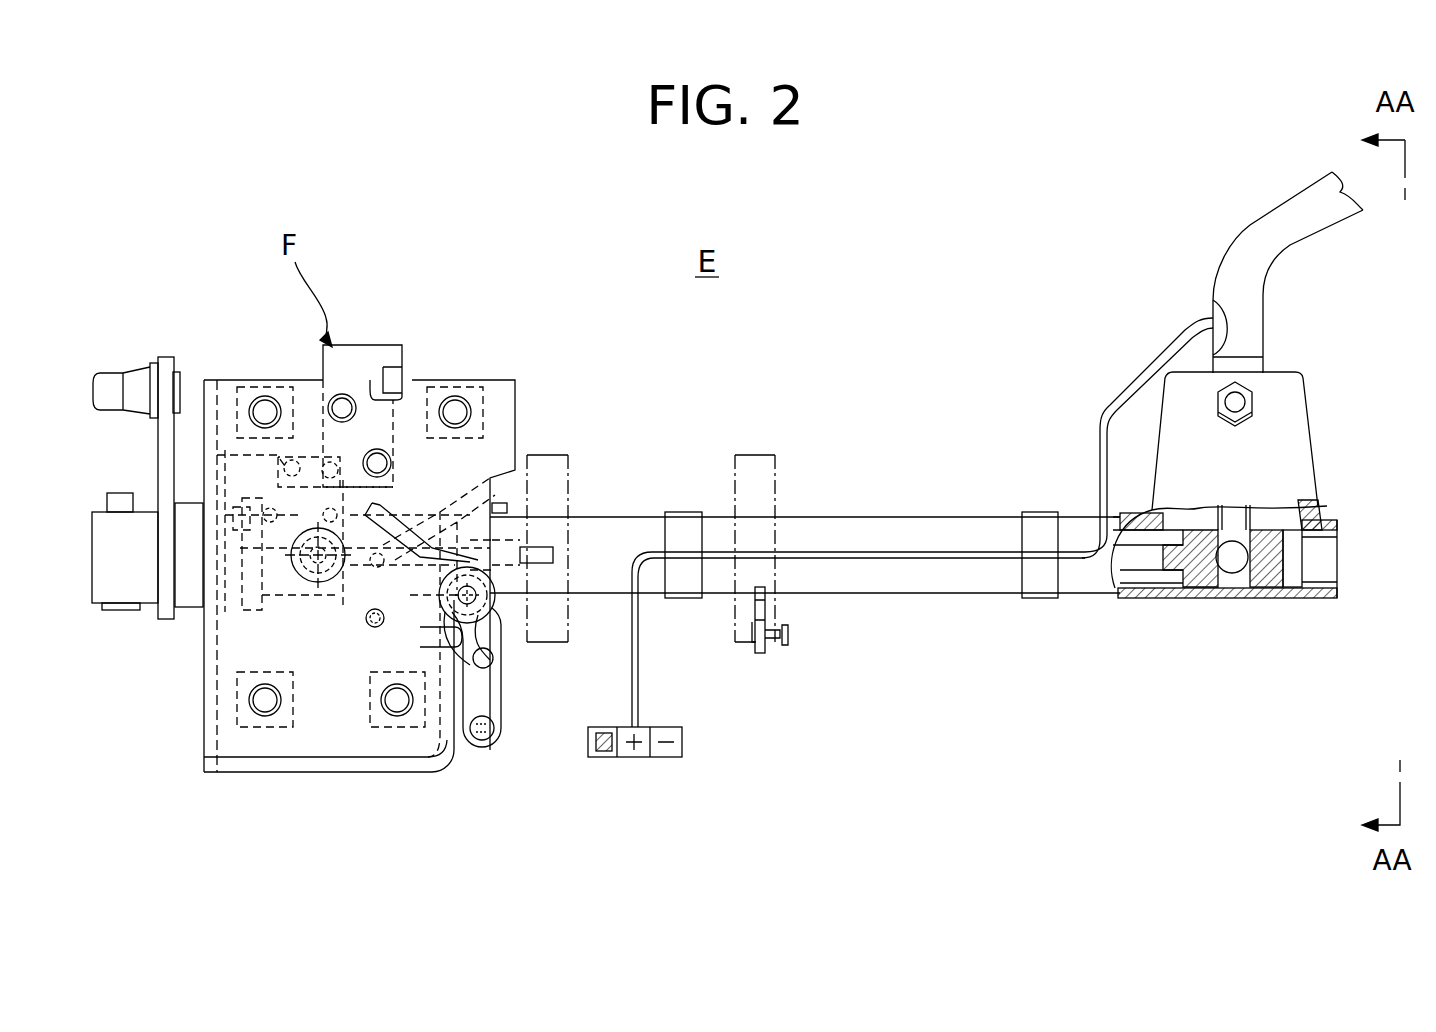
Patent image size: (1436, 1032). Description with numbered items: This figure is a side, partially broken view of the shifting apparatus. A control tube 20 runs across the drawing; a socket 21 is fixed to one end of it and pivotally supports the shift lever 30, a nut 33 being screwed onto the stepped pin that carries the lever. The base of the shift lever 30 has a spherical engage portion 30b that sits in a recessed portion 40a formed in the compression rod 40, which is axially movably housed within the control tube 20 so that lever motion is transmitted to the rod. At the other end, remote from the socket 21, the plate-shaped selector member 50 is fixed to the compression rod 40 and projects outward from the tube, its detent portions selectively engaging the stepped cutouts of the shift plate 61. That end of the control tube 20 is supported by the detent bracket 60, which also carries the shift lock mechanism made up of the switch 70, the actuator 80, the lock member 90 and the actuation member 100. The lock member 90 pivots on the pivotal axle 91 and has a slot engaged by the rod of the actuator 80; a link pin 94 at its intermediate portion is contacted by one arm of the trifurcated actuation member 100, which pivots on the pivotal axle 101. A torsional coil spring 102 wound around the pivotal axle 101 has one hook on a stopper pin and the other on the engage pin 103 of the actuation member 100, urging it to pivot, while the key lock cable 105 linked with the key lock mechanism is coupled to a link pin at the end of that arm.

The control tube 20 is at (886, 530).
The socket 21 is at (1305, 457).
The shift lever 30 is at (1252, 229).
The engage portion 30b is at (1210, 596).
The nut 33 is at (1228, 418).
The compression rod 40 is at (1146, 570).
The recessed portion 40a is at (1240, 585).
The selector member 50 is at (540, 545).
The detent bracket 60 is at (316, 774).
The shift plate 61 is at (458, 748).
The switch 70 is at (248, 454).
The actuator 80 is at (373, 358).
The lock member 90 is at (417, 532).
The pivotal axle 91 is at (322, 572).
The link pin 94 is at (348, 583).
The actuation member 100 is at (498, 745).
The pivotal axle 101 is at (518, 586).
The torsional coil spring 102 is at (490, 625).
The engage pin 103 is at (493, 666).
The key lock cable 105 is at (502, 732).